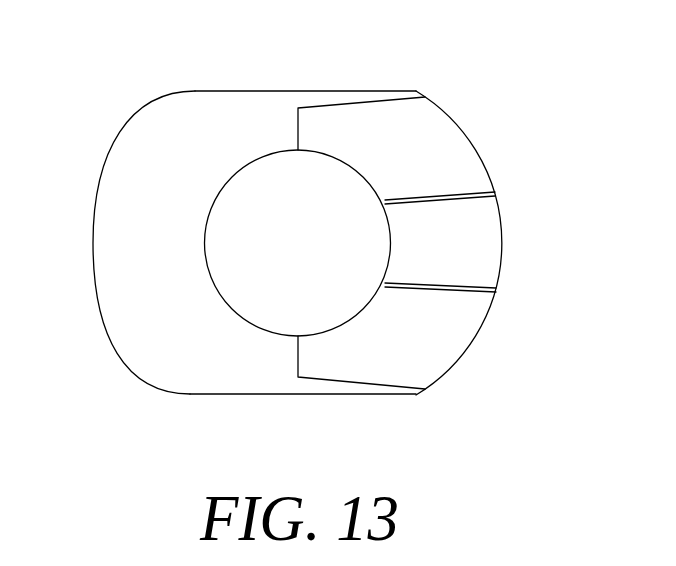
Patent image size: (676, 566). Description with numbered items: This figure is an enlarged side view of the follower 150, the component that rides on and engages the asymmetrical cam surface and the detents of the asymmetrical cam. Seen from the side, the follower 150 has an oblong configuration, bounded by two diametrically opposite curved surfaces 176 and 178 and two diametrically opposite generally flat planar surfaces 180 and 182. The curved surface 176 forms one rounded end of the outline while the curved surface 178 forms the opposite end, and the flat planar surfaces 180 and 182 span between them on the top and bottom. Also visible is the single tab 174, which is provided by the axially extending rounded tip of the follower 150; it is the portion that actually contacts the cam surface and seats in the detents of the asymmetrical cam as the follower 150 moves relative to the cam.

The follower 150 is at (153, 73).
The tab 174 is at (489, 249).
The curved surface 176 is at (112, 156).
The curved surface 178 is at (476, 166).
The flat planar surface 180 is at (345, 100).
The flat planar surface 182 is at (279, 385).